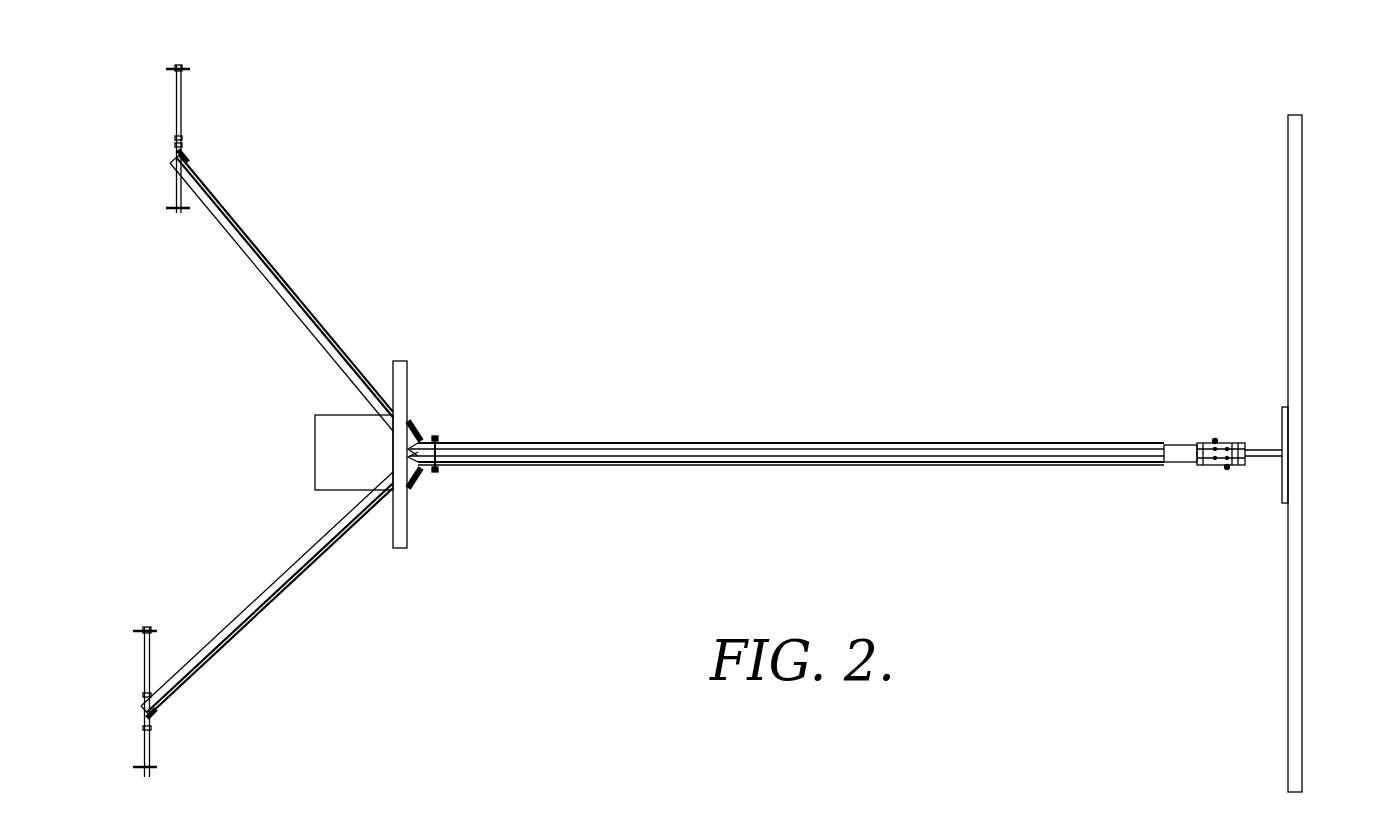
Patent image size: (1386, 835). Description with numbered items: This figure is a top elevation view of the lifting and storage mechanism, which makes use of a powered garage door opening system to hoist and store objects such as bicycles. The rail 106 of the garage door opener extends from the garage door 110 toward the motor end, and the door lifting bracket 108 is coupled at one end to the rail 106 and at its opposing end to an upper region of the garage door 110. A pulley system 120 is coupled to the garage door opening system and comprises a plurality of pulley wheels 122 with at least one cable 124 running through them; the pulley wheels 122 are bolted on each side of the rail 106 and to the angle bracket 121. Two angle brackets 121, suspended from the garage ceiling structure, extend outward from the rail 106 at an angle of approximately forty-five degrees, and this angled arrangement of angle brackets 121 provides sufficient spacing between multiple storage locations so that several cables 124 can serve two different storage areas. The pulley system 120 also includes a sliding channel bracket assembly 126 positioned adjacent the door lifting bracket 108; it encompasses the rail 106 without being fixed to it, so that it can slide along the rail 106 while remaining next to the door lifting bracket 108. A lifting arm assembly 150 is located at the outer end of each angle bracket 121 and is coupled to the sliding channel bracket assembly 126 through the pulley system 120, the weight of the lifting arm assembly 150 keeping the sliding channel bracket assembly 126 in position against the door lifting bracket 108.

The rail 106 is at (806, 448).
The door lifting bracket 108 is at (1182, 447).
The garage door 110 is at (1300, 689).
The pulley system 120 is at (493, 352).
The angle bracket 121 is at (268, 272).
The pulley wheels 122 is at (190, 160).
The cable 124 is at (294, 280).
The sliding channel bracket assembly 126 is at (1222, 470).
The lifting arm assembly 150 is at (168, 62).